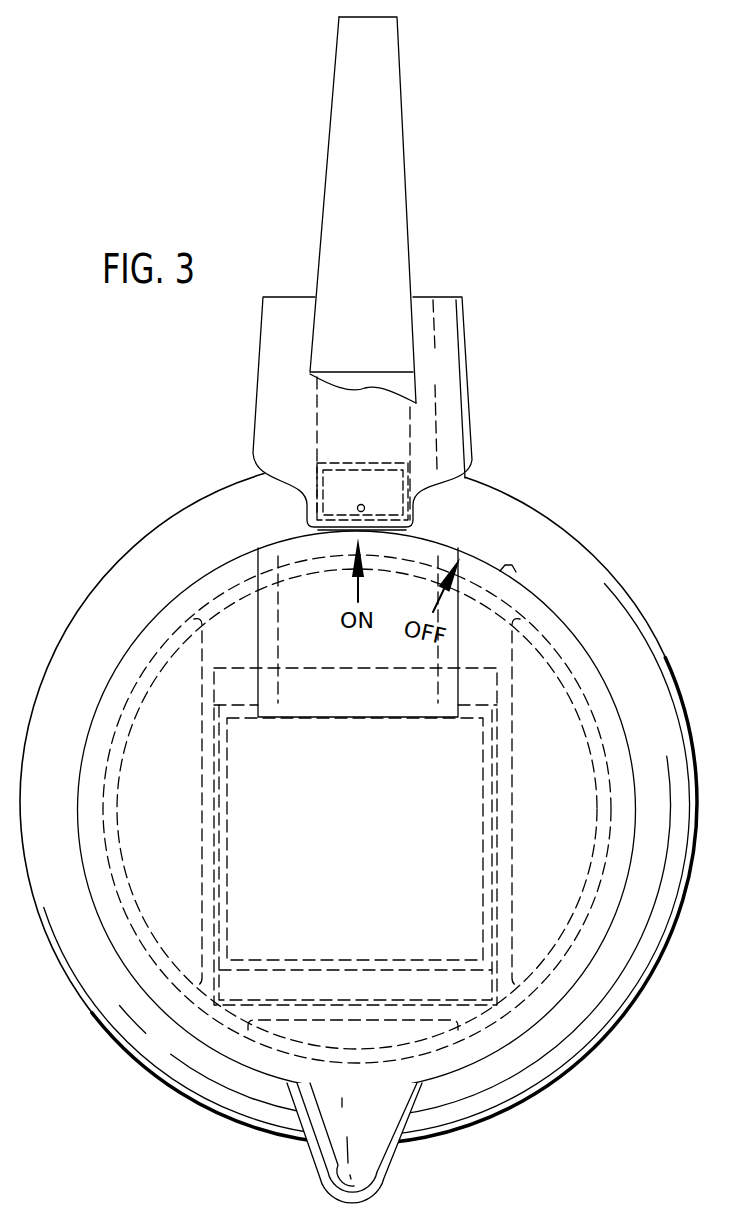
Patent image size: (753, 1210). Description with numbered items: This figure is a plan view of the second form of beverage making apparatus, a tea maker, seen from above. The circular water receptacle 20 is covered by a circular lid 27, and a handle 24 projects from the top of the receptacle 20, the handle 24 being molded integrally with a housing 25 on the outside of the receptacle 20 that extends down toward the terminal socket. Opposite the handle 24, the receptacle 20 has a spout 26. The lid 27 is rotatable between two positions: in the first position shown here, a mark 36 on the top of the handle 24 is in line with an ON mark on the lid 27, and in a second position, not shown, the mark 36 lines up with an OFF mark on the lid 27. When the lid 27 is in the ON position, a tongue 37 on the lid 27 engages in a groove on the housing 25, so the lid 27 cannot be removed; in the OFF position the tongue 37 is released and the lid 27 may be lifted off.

The water receptacle 20 is at (608, 603).
The handle 24 is at (400, 272).
The housing 25 is at (469, 357).
The spout 26 is at (385, 1180).
The lid 27 is at (585, 657).
The mark 36 is at (364, 505).
The tongue 37 is at (336, 532).